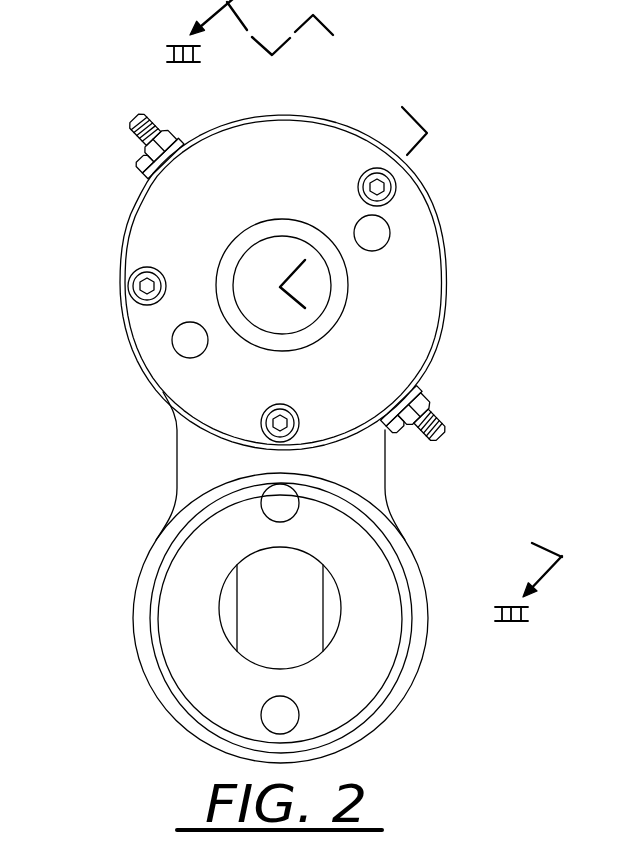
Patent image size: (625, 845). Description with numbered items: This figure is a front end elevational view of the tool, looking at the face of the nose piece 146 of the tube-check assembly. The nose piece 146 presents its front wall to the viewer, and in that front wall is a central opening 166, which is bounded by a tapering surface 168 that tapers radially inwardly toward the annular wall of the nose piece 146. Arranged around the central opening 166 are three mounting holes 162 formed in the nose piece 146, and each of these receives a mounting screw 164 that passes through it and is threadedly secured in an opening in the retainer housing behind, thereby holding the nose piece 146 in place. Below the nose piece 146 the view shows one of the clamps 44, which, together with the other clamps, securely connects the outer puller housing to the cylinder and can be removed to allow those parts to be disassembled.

The clamp 44 is at (193, 467).
The nose piece 146 is at (290, 145).
The mounting holes 162 is at (383, 192).
The mounting screws 164 is at (388, 200).
The central opening 166 is at (325, 282).
The tapering surface 168 is at (333, 270).